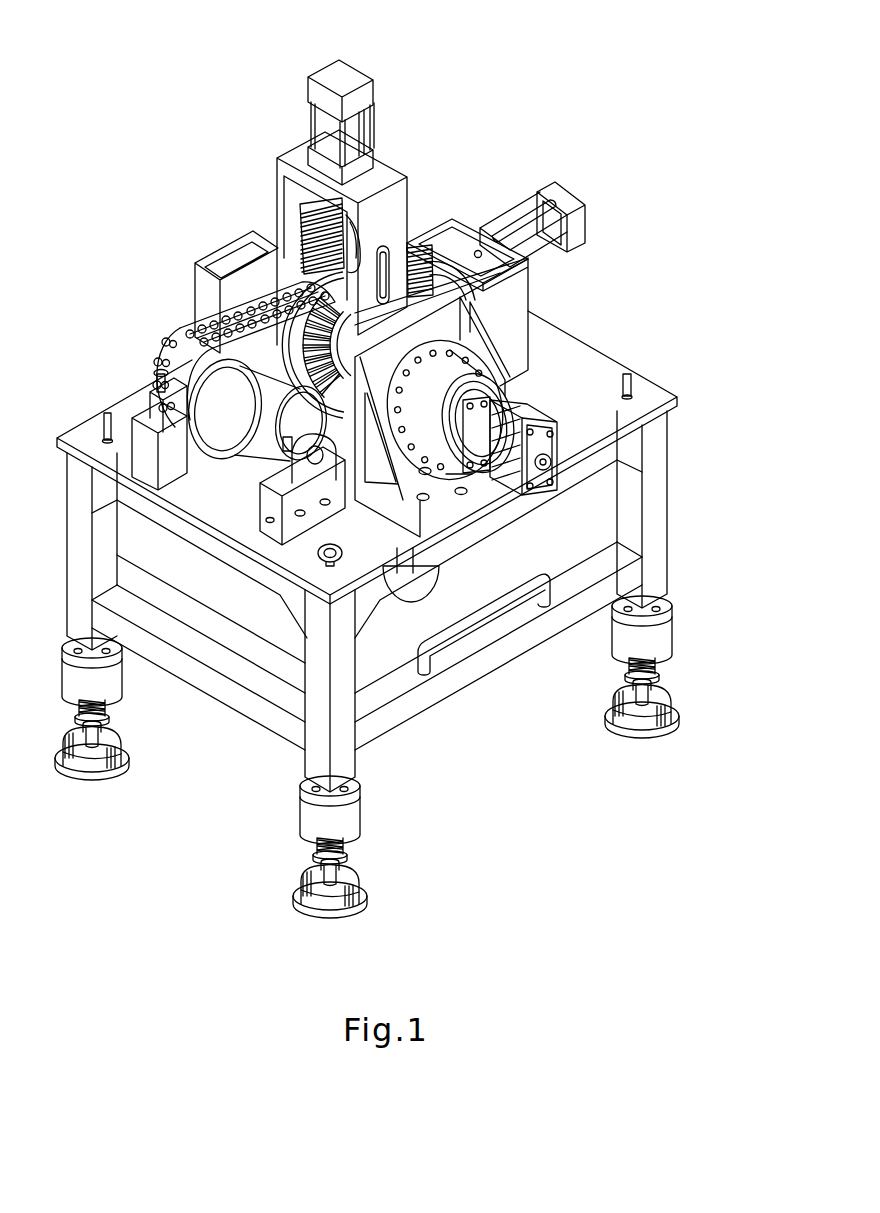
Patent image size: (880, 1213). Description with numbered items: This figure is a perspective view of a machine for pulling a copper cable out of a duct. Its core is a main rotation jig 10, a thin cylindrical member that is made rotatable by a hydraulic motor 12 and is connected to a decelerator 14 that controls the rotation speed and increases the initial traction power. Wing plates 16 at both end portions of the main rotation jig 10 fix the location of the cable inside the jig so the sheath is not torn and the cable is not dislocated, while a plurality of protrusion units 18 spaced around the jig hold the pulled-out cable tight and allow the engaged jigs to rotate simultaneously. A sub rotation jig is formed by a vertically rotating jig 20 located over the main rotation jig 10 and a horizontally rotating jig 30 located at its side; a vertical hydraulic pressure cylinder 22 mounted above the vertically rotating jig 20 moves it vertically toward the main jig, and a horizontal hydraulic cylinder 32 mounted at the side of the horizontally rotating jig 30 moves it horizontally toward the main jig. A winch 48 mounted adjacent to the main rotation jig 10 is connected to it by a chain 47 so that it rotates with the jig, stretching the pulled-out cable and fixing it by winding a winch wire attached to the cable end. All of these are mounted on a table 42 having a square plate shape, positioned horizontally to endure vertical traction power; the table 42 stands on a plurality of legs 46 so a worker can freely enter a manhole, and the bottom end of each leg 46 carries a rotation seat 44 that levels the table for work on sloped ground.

The main rotation jig 10 is at (300, 268).
The hydraulic motor 12 is at (560, 442).
The decelerator 14 is at (465, 372).
The wing plate 16 is at (255, 305).
The protrusion unit 18 is at (325, 358).
The vertically rotating jig 20 is at (304, 205).
The vertical hydraulic pressure cylinder 22 is at (347, 76).
The horizontally rotating jig 30 is at (427, 247).
The horizontal hydraulic cylinder 32 is at (560, 202).
The table 42 is at (605, 369).
The rotation seat 44 is at (670, 712).
The leg 46 is at (658, 524).
The chain 47 is at (180, 349).
The winch 48 is at (153, 407).